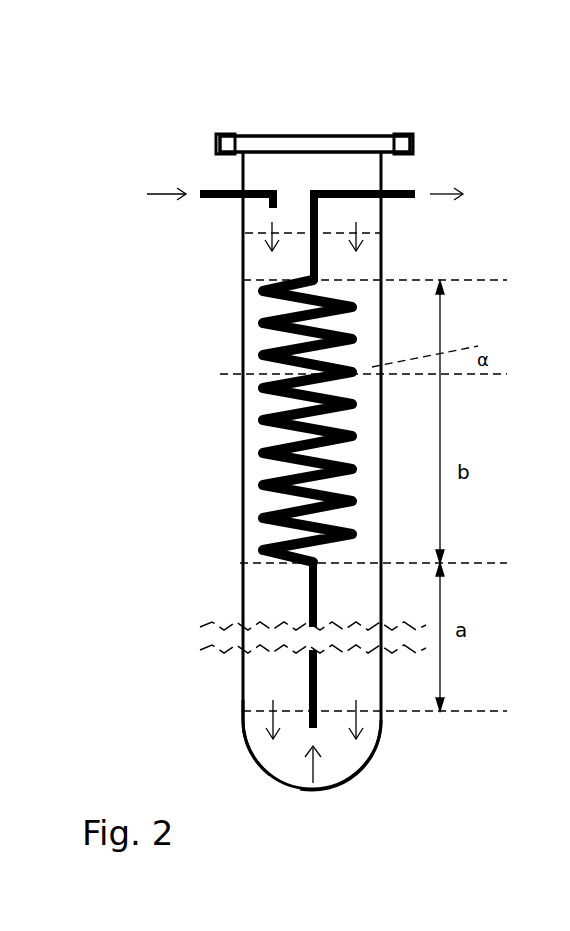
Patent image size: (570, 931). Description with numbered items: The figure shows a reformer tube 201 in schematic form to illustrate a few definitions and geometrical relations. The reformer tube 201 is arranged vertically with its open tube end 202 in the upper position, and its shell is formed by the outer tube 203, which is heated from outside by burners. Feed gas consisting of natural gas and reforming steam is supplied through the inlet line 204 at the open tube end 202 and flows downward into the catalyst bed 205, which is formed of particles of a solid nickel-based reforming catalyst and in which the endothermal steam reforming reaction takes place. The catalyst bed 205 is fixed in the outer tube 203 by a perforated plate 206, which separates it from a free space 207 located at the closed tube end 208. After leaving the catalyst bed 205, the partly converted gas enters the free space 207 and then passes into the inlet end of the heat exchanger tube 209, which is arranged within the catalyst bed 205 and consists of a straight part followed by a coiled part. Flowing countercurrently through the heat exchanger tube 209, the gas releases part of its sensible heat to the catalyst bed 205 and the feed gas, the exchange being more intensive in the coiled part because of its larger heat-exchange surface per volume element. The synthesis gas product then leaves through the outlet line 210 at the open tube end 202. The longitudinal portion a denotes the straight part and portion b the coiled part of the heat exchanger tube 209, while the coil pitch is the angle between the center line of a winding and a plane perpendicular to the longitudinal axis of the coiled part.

The reformer tube 201 is at (226, 516).
The open tube end 202 is at (360, 136).
The outer tube 203 is at (241, 327).
The inlet line 204 is at (230, 190).
The catalyst bed 205 is at (277, 603).
The perforated plate 206 is at (242, 714).
The free space 207 is at (335, 737).
The closed tube end 208 is at (370, 762).
The heat exchanger tube 209 is at (309, 683).
The outlet line 210 is at (400, 190).